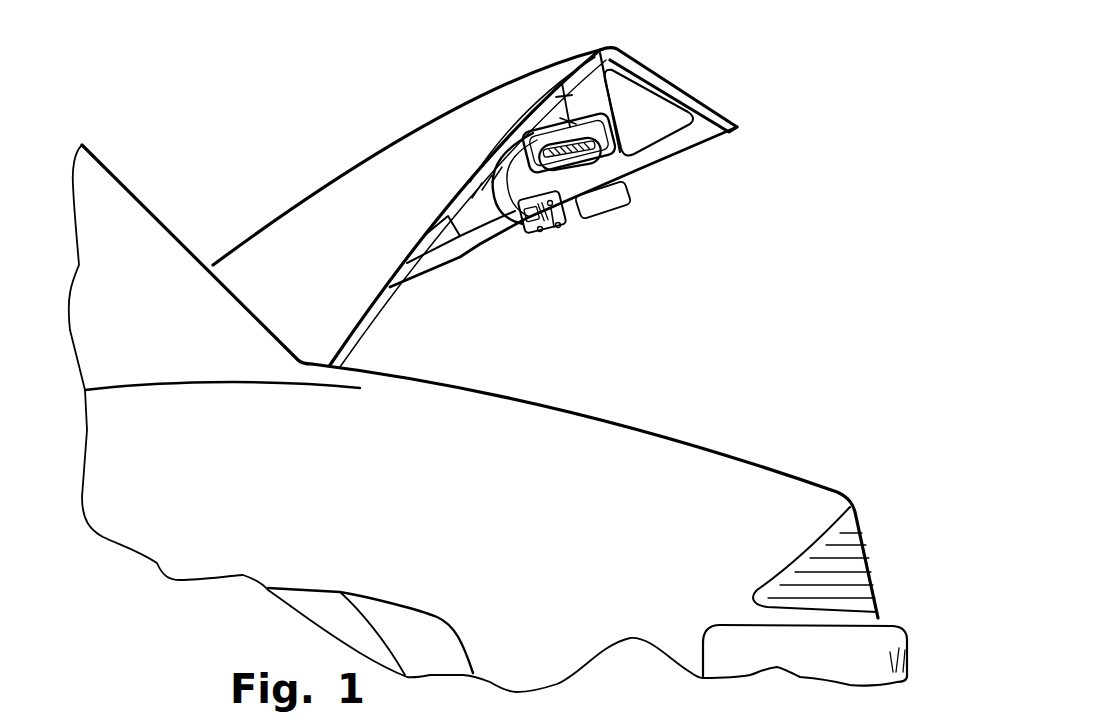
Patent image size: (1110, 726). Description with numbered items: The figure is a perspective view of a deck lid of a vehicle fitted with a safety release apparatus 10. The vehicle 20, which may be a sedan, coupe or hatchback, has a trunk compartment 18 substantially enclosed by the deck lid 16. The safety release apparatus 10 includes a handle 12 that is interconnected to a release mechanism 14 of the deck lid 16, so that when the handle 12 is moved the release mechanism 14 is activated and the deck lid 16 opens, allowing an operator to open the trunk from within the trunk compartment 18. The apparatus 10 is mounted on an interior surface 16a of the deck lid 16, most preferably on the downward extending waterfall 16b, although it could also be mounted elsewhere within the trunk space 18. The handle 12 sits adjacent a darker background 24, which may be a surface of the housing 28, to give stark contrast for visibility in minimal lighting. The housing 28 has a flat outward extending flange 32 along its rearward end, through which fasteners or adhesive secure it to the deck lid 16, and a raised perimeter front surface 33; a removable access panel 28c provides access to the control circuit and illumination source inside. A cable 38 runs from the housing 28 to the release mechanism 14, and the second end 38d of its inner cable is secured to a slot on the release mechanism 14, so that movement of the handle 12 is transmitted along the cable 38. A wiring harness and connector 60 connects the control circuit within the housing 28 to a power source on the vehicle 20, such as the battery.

The safety release apparatus 10 is at (628, 110).
The handle 12 is at (557, 165).
The release mechanism 14 is at (553, 215).
The deck lid 16 is at (417, 147).
The interior surface 16a is at (616, 62).
The waterfall 16b is at (480, 238).
The trunk compartment 18 is at (545, 392).
The vehicle 20 is at (653, 460).
The background 24 is at (586, 150).
The housing 28 is at (637, 173).
The removable access panel 28c is at (552, 130).
The flange 32 is at (600, 133).
The raised perimeter front surface 33 is at (617, 208).
The cable 38 is at (458, 208).
The second end of inner cable 38d is at (490, 236).
The wiring harness and connector 60 is at (568, 127).